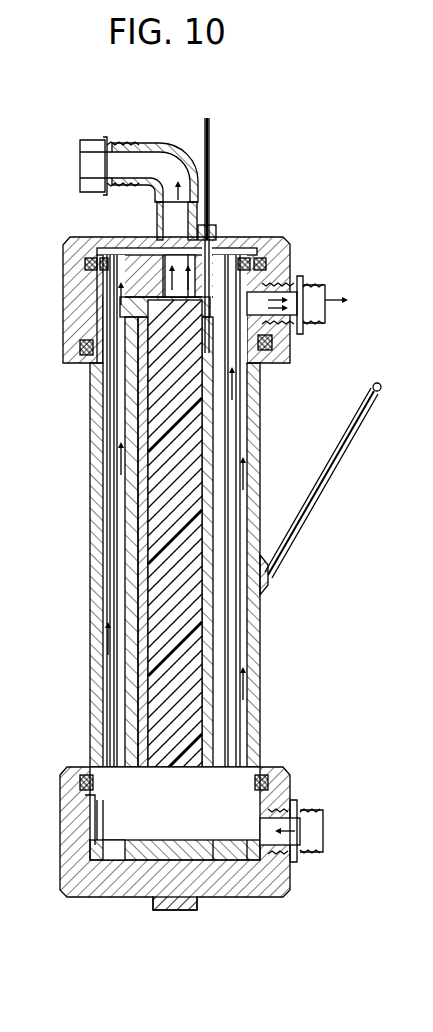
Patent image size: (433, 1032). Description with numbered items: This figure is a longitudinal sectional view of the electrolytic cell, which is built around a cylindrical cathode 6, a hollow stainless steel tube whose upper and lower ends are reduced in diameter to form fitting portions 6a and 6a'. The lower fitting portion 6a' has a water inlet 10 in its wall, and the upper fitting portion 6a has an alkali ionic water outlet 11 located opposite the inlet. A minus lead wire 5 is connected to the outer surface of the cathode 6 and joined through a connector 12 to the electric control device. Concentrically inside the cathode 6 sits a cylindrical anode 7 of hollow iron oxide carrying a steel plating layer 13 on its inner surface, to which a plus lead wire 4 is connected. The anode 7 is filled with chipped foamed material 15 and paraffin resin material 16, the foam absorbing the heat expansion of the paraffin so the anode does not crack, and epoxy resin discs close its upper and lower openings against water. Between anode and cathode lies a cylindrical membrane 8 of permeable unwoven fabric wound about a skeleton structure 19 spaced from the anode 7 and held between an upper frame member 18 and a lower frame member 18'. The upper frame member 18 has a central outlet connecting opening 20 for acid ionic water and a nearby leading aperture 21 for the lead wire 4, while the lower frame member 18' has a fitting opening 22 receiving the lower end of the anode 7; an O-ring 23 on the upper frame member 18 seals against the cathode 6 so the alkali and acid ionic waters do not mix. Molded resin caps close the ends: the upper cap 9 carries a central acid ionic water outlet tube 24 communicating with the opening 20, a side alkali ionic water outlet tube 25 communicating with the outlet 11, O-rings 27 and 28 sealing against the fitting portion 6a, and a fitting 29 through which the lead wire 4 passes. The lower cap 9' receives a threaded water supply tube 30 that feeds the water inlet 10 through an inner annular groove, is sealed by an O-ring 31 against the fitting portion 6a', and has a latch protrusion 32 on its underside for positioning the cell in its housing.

The plus lead wire 4 is at (211, 164).
The minus lead wire 5 is at (318, 488).
The cylindrical cathode 6 is at (260, 608).
The upper fitting portion 6a is at (66, 309).
The lower fitting portion 6a' is at (58, 810).
The cylindrical anode 7 is at (125, 604).
The cylindrical membrane 8 is at (107, 693).
The upper cap 9 is at (197, 294).
The lower cap 9' is at (194, 841).
The water inlet 10 is at (95, 836).
The alkali ionic water outlet 11 is at (272, 328).
The connector 12 is at (211, 127).
The steel plating layer 13 is at (142, 500).
The chipped foamed material 15 is at (155, 452).
The paraffin resin material 16 is at (155, 528).
The upper frame member 18 is at (258, 236).
The lower frame member 18' is at (243, 888).
The skeleton structure 19 is at (230, 453).
The outlet connecting opening 20 is at (175, 283).
The leading aperture 21 is at (157, 220).
The fitting opening 22 is at (122, 862).
The O-ring 23 is at (252, 250).
The acid ionic water outlet tube 24 is at (162, 143).
The alkali ionic water outlet tube 25 is at (322, 285).
The O-ring 27 is at (86, 358).
The O-ring 28 is at (88, 258).
The fitting 29 is at (212, 232).
The water supply tube 30 is at (312, 810).
The O-ring 31 is at (262, 775).
The latch protrusion 32 is at (177, 912).